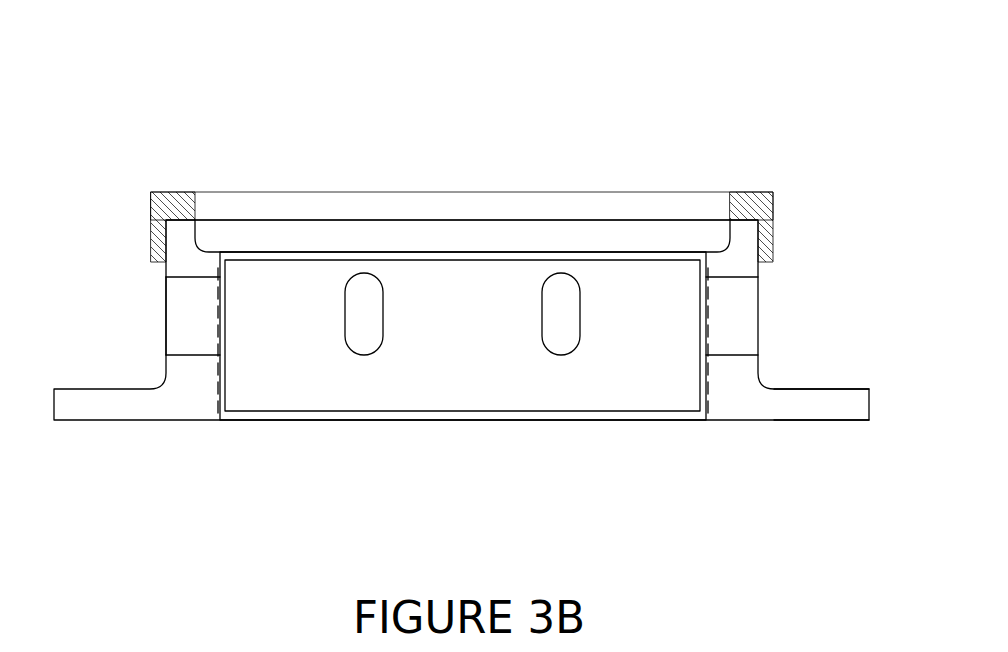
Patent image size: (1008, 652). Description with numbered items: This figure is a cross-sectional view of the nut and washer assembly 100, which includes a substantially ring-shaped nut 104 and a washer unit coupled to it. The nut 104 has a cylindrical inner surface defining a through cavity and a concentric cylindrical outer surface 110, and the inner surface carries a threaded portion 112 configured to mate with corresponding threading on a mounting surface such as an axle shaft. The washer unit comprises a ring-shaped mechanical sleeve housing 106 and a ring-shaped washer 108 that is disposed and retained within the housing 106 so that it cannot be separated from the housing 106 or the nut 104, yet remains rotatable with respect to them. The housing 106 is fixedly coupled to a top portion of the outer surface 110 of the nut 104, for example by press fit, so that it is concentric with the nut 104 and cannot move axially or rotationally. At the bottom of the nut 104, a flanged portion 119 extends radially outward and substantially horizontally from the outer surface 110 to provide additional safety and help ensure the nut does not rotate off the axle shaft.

The nut and washer assembly 100 is at (790, 54).
The nut 104 is at (136, 324).
The mechanical sleeve housing 106 is at (762, 233).
The washer 108 is at (743, 216).
The outer surface 110 is at (760, 342).
The threaded portion 112 is at (705, 307).
The flanged portion 119 is at (820, 403).